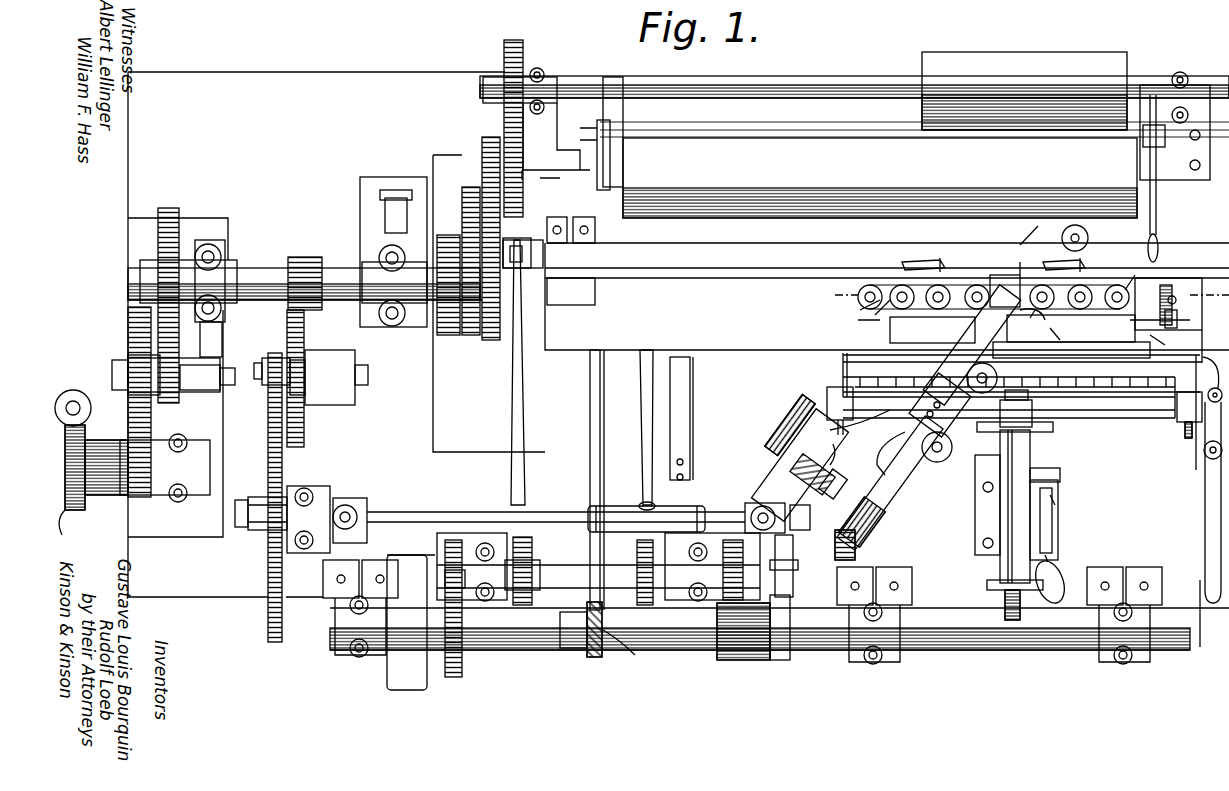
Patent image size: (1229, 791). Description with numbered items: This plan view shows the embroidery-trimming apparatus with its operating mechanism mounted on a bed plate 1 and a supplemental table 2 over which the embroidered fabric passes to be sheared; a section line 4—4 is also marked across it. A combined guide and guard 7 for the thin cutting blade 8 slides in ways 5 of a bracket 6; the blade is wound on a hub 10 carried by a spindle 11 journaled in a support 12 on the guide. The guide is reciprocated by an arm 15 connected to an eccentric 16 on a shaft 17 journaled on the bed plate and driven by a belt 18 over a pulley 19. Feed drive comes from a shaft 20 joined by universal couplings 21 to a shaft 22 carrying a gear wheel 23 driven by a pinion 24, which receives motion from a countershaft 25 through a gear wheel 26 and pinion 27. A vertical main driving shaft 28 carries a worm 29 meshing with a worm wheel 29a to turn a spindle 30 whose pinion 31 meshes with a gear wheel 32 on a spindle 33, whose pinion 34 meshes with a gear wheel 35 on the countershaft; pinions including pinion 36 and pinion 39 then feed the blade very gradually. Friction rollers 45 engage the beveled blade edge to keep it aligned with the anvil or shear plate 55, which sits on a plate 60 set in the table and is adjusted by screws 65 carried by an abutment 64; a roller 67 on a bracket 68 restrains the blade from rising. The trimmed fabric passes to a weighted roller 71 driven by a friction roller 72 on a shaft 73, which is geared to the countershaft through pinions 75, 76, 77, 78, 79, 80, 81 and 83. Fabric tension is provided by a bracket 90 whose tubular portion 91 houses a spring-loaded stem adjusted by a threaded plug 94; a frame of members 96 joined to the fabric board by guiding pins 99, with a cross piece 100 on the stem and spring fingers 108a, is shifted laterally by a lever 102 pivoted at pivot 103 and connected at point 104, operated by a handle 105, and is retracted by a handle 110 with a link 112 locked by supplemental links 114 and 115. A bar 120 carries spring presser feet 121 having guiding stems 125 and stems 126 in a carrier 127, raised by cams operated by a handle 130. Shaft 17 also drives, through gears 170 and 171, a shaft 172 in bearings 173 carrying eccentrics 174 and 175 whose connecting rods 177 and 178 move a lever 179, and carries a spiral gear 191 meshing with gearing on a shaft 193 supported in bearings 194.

The bed plate 1 is at (316, 334).
The supplemental bed or table 2 is at (831, 317).
The frame bar 4 is at (1195, 632).
The ways 5 is at (799, 465).
The bracket 6 is at (1022, 366).
The combined guide and guard 7 is at (905, 463).
The cutting blade 8 is at (1033, 324).
The hub 10 is at (898, 498).
The spindle 11 is at (823, 447).
The support 12 is at (839, 484).
The arm 15 is at (793, 548).
The eccentric 16 is at (782, 665).
The shaft 17 is at (928, 645).
The belt 18 is at (411, 545).
The pulley 19 is at (427, 686).
The shaft 20 is at (415, 513).
The universal couplings 21 is at (358, 505).
The shaft 22 is at (240, 528).
The gear wheel 23 is at (283, 465).
The pinion 24 is at (275, 356).
The countershaft 25 is at (262, 268).
The gear wheel 26 is at (305, 428).
The pinion 27 is at (307, 271).
The main driving shaft 28 is at (76, 400).
The worm 29 is at (92, 410).
The worm wheel 29a is at (80, 516).
The shaft or spindle 30 is at (210, 470).
The pinion 31 is at (150, 500).
The gear wheel 32 is at (151, 424).
The shaft or spindle 33 is at (235, 375).
The pinion 34 is at (166, 375).
The gear wheel 35 is at (180, 212).
The pinion 36 is at (856, 547).
The pinion 39 is at (790, 422).
The friction rollers 45 is at (940, 470).
The anvil or shear plate 55 is at (1165, 338).
The plate 60 is at (859, 314).
The abutment 64 is at (1167, 320).
The screws 65 is at (1179, 316).
The roller 67 is at (965, 356).
The bracket 68 is at (1028, 264).
The roller 71 is at (880, 178).
The friction roller 72 is at (914, 94).
The driven shaft 73 is at (862, 92).
The pinion 75 is at (513, 40).
The pinion 76 is at (520, 185).
The pinion 77 is at (515, 215).
The pinion 78 is at (480, 233).
The pinion 79 is at (495, 270).
The pinion 80 is at (462, 202).
The pinion 81 is at (484, 335).
The pinion 83 is at (448, 335).
The bracket 90 is at (980, 505).
The tubular portion 91 is at (1014, 506).
The hollow threaded plug 94 is at (1011, 600).
The members 96 is at (1002, 412).
The guiding bolts or pins 99 is at (1002, 408).
The cross piece 100 is at (1053, 428).
The lever 102 is at (1205, 492).
The pivot 103 is at (1195, 452).
The connection point 104 is at (1201, 369).
The handle 105 is at (1205, 570).
The spring fingers 108a is at (1125, 390).
The handle 110 is at (1060, 560).
The link 112 is at (1060, 500).
The supplemental link 114 is at (1058, 518).
The supplemental link 115 is at (1060, 476).
The bar 120 is at (895, 265).
The spring presser feet 121 is at (1100, 338).
The guiding stem 125 is at (1012, 327).
The stems 126 is at (1009, 299).
The carrier 127 is at (1053, 265).
The operating handle 130 is at (967, 332).
The gear 170 is at (462, 660).
The gear 171 is at (598, 564).
The shaft 172 is at (530, 555).
The bearings 173 is at (470, 573).
The eccentric 174 is at (530, 522).
The eccentric 175 is at (709, 567).
The connecting rod 177 is at (527, 470).
The connecting rod 178 is at (645, 422).
The lever or arm 179 is at (545, 255).
The spiral gear 191 is at (592, 660).
The shaft 193 is at (590, 395).
The bearings 194 is at (634, 602).